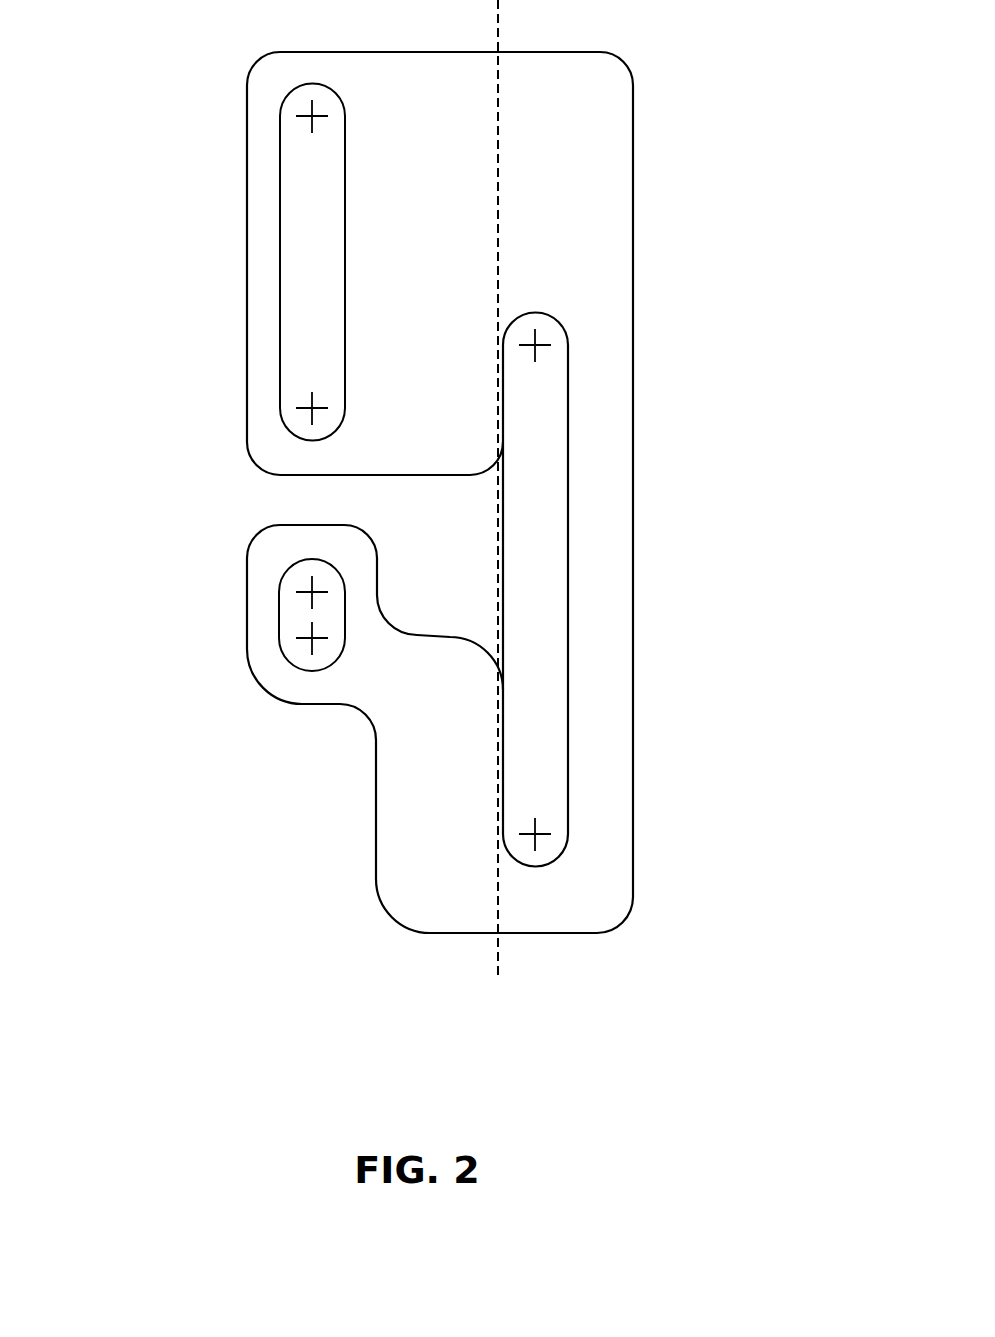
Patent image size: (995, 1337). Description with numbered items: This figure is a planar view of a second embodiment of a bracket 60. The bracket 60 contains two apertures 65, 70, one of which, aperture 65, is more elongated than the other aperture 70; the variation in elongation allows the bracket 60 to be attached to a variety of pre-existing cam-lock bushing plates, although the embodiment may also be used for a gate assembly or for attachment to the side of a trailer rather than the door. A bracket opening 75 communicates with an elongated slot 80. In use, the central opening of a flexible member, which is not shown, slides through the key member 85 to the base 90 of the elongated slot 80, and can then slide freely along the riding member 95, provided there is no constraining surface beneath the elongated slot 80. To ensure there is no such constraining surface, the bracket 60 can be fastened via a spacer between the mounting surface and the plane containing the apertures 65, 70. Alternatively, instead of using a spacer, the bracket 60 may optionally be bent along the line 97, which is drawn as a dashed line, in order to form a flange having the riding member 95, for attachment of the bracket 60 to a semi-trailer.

The bracket 60 is at (678, 808).
The elongated aperture 65 is at (338, 168).
The aperture 70 is at (302, 593).
The bracket opening 75 is at (261, 484).
The elongated slot 80 is at (542, 402).
The key member 85 is at (360, 669).
The base of the elongated slot 90 is at (542, 838).
The riding member 95 is at (621, 593).
The bend line 97 is at (477, 984).